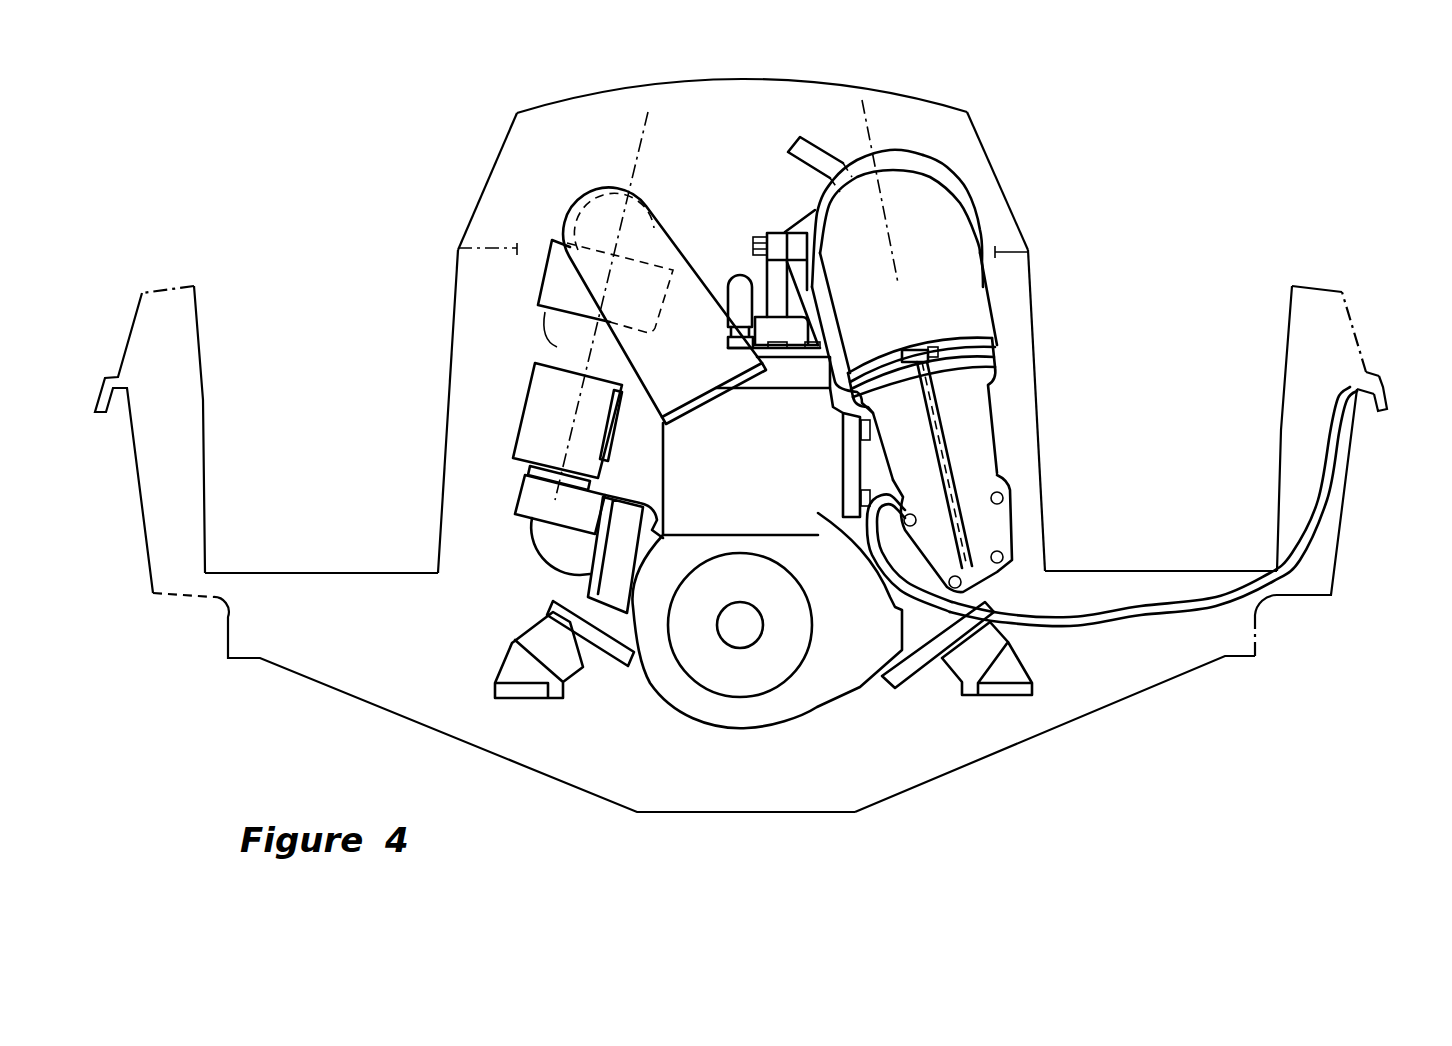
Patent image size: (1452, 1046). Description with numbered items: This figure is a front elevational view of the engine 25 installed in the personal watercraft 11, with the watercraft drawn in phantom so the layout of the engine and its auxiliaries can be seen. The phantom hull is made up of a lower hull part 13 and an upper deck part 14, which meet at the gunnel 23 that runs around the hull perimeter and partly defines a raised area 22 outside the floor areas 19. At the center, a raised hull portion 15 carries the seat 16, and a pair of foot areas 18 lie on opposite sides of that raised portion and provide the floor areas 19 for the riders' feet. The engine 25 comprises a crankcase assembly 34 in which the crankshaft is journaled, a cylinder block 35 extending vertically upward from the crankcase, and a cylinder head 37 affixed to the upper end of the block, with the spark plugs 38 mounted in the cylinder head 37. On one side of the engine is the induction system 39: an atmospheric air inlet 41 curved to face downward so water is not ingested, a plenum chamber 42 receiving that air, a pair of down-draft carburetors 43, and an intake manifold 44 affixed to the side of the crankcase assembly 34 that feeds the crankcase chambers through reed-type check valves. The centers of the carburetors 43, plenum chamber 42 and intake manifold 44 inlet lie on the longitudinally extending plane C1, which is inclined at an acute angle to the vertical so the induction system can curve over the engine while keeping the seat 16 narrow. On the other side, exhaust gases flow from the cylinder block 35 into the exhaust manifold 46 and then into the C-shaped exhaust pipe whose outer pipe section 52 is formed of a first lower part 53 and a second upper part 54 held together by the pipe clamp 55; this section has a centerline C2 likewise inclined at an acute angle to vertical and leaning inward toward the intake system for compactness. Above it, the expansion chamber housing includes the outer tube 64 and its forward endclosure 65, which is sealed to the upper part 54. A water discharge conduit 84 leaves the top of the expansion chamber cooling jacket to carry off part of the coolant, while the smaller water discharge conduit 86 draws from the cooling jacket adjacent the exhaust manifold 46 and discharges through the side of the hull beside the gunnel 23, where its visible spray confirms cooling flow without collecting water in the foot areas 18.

The watercraft 11 is at (1003, 787).
The lower hull part 13 is at (1212, 662).
The upper deck part 14 is at (1370, 375).
The raised hull portion 15 is at (1042, 398).
The seat 16 is at (1018, 213).
The foot areas 18 is at (313, 485).
The floor areas 19 is at (372, 573).
The raised area 22 is at (1352, 310).
The gunnel 23 is at (1387, 398).
The engine 25 is at (648, 715).
The crankcase assembly 34 is at (725, 710).
The cylinder block 35 is at (793, 522).
The cylinder head 37 is at (778, 377).
The spark plugs 38 is at (740, 277).
The induction system 39 is at (515, 432).
The atmospheric air inlet 41 is at (678, 237).
The plenum chamber 42 is at (545, 278).
The down-draft carburetors 43 is at (542, 385).
The intake manifold 44 is at (545, 533).
The exhaust manifold 46 is at (883, 480).
The outer pipe section 52 is at (992, 523).
The first lower part 53 is at (982, 458).
The second upper part 54 is at (968, 300).
The pipe clamp 55 is at (1015, 316).
The outer tube 64 is at (912, 165).
The forward endclosure 65 is at (960, 183).
The water discharge conduit 84 is at (815, 135).
The water discharge conduit 86 is at (1115, 620).
The longitudinally extending plane C1 is at (630, 176).
The centerline C2 is at (870, 128).